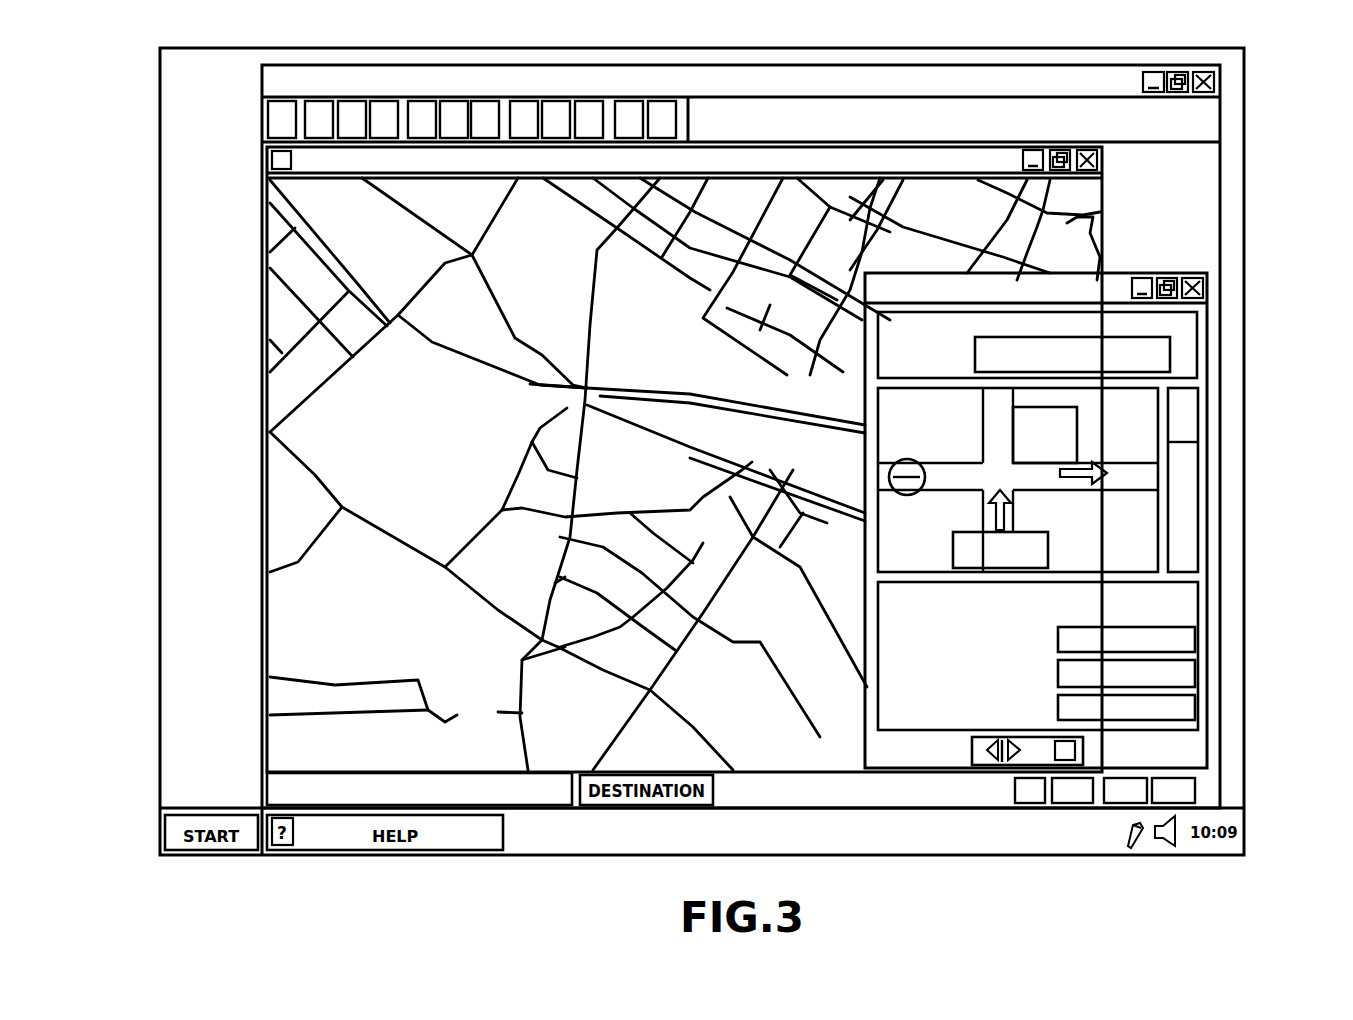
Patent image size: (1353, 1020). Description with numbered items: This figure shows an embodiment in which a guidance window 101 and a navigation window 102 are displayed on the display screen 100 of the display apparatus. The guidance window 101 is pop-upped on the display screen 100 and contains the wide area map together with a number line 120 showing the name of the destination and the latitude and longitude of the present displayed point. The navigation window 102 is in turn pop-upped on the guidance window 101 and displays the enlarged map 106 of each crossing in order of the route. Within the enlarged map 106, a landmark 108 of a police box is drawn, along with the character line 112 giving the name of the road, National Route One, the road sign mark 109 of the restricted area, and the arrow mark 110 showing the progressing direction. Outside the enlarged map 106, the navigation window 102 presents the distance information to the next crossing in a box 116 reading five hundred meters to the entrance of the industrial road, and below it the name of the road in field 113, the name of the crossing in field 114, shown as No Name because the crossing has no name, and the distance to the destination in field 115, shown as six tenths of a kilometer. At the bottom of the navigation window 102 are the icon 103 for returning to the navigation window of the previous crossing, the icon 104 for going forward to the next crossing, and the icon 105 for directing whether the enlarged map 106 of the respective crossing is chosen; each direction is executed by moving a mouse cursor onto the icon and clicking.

The display screen 100 is at (1260, 128).
The guidance window 101 is at (1068, 225).
The navigation window 102 is at (1099, 585).
The icon 103 is at (992, 762).
The icon 104 is at (1005, 762).
The icon 105 is at (1065, 760).
The enlarged map 106 is at (1133, 436).
The landmark 108 is at (1067, 413).
The road sign mark 109 is at (920, 482).
The arrow mark 110 is at (1107, 473).
The character line 112 is at (1048, 548).
The name of road field 113 is at (1195, 638).
The name of crossing field 114 is at (1195, 673).
The distance to destination field 115 is at (1185, 708).
The next crossing information box 116 is at (1170, 352).
The number line 120 is at (537, 800).